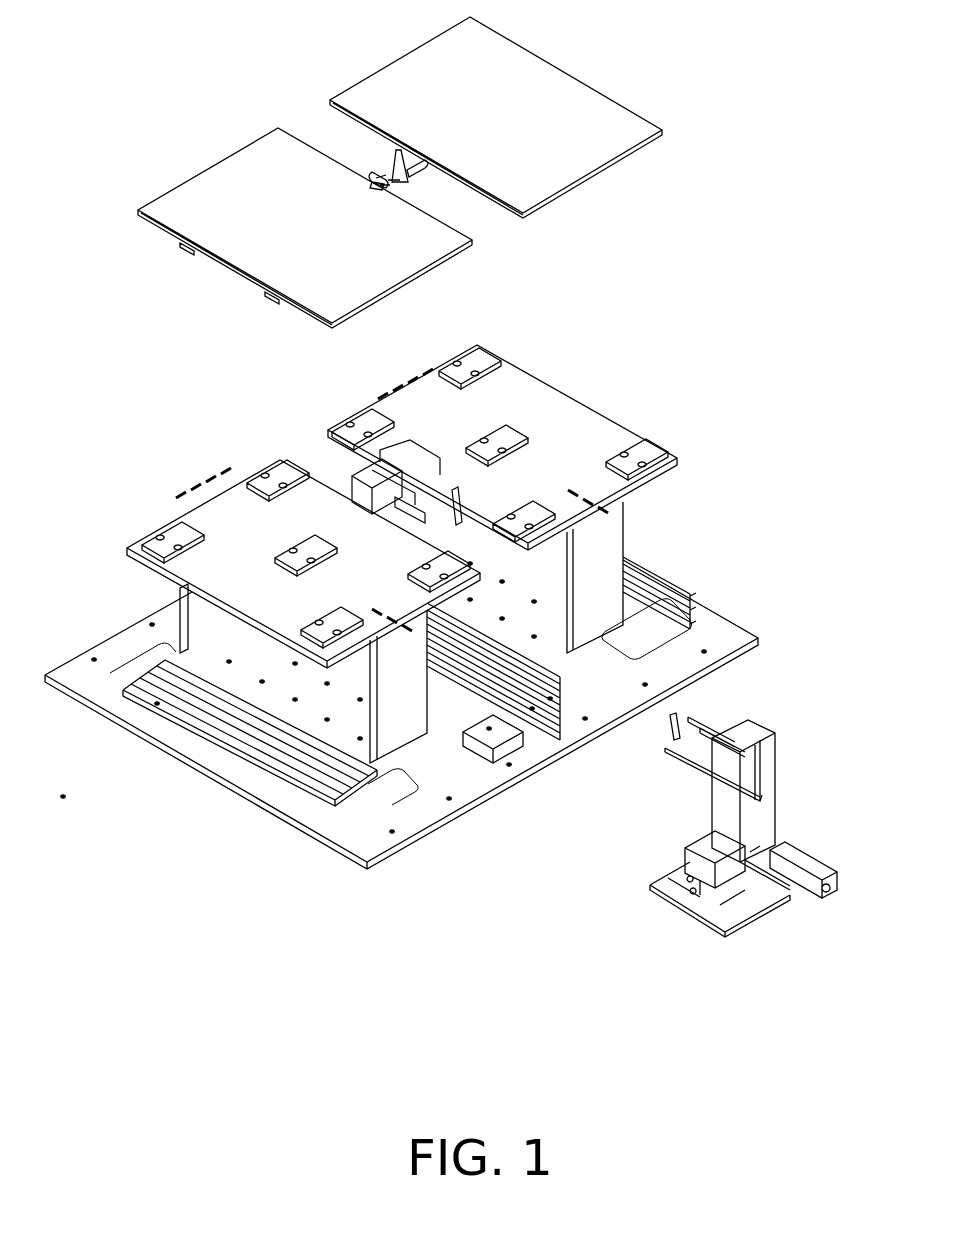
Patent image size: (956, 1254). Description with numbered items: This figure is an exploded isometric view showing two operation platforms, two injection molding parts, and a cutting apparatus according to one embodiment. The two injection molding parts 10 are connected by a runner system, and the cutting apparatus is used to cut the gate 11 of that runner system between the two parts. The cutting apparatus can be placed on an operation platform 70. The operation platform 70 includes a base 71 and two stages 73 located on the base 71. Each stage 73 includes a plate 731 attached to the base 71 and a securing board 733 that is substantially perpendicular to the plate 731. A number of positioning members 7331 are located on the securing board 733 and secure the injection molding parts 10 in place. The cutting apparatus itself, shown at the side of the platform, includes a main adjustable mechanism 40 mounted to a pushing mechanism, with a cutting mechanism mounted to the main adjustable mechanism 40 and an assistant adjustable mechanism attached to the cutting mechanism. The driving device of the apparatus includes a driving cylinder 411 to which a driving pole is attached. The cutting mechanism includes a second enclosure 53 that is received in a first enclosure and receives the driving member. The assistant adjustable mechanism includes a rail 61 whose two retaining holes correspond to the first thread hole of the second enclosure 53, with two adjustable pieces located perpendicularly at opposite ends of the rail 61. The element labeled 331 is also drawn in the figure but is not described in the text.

The injection molding part 10 is at (420, 80).
The gate 11 is at (380, 172).
The operation platform 70 is at (394, 628).
The base 71 is at (408, 813).
The stage 73 is at (396, 624).
The plate 731 is at (390, 705).
The securing board 733 is at (283, 618).
The positioning member 7331 is at (637, 453).
The second enclosure 53 is at (762, 748).
The rail 61 is at (692, 770).
The main adjustable mechanism 40 is at (705, 845).
The driving cylinder 411 is at (707, 905).
The cylinder 331 is at (798, 893).